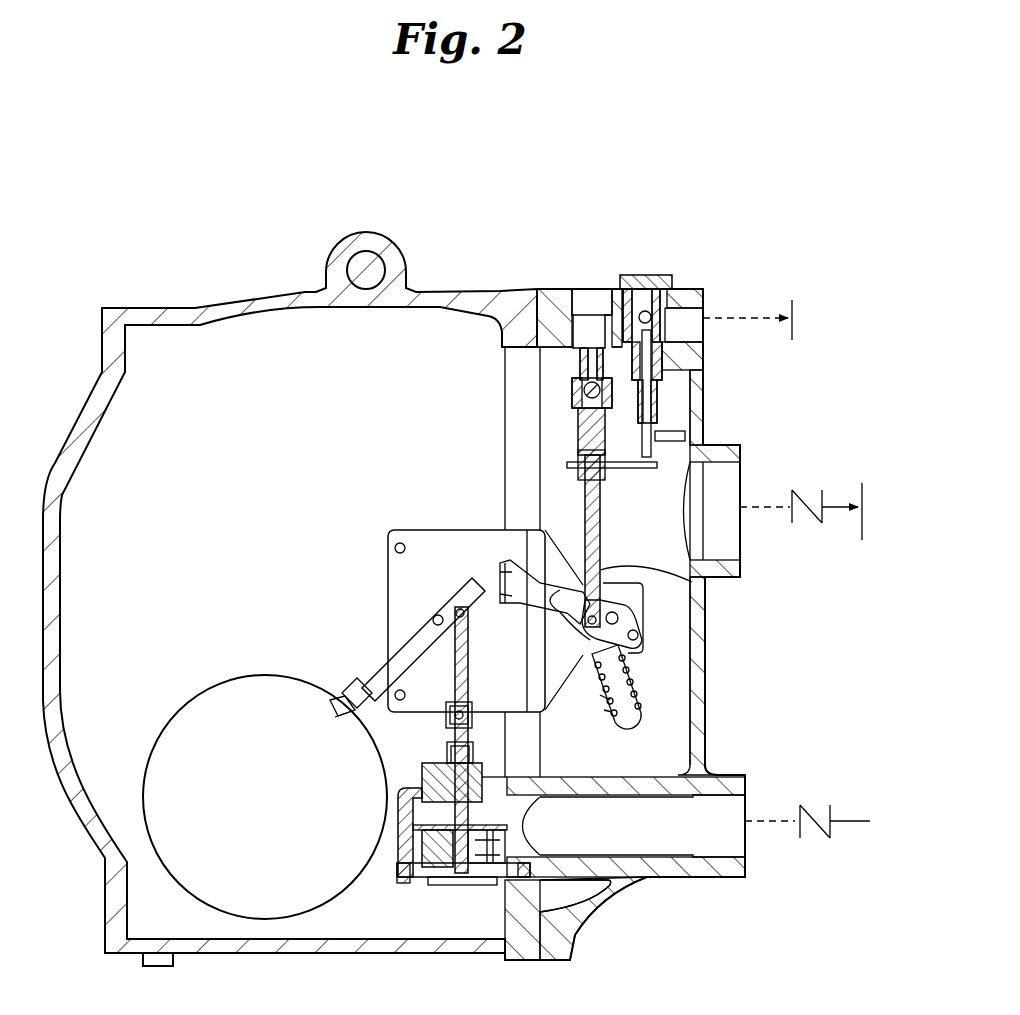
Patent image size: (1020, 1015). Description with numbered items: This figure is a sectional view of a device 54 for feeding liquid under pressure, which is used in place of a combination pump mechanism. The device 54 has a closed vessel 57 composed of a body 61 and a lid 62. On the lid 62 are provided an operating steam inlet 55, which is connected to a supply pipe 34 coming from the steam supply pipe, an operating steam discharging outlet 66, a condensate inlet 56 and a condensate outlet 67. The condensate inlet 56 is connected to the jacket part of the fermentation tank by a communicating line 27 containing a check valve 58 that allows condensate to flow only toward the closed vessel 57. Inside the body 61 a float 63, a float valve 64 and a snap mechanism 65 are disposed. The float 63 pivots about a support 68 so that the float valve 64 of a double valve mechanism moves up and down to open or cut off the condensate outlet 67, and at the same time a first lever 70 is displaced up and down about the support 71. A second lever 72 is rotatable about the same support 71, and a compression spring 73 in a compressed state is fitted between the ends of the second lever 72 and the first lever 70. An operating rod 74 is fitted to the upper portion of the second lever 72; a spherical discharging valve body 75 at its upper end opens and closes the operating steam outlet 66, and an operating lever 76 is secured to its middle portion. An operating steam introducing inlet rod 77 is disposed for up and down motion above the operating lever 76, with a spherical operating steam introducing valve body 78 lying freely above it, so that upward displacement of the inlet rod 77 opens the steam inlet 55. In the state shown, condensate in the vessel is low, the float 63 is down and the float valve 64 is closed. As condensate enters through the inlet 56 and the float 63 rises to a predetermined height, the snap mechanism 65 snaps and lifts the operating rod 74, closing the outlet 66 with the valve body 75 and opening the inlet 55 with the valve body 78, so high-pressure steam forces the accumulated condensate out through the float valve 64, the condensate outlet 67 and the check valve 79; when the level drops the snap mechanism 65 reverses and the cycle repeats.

The communicating line 27 is at (868, 522).
The supply pipe 34 is at (767, 320).
The device for feeding liquid under pressure 54 is at (310, 270).
The operating steam inlet 55 is at (700, 332).
The condensate inlet 56 is at (740, 548).
The closed vessel 57 is at (264, 512).
The check valve 58 is at (803, 498).
The body 61 is at (236, 310).
The lid 62 is at (548, 298).
The float 63 is at (246, 796).
The float valve 64 is at (417, 893).
The snap mechanism 65 is at (647, 683).
The operating steam discharging outlet 66 is at (596, 298).
The condensate outlet 67 is at (730, 848).
The support 68 is at (436, 618).
The first lever 70 is at (510, 560).
The support 71 is at (618, 618).
The second lever 72 is at (630, 665).
The compression spring 73 is at (640, 697).
The operating rod 74 is at (705, 590).
The spherical discharging valve body 75 is at (575, 378).
The operating lever 76 is at (630, 470).
The operating steam introducing inlet rod 77 is at (655, 453).
The operating steam introducing valve body 78 is at (655, 276).
The check valve 79 is at (812, 812).